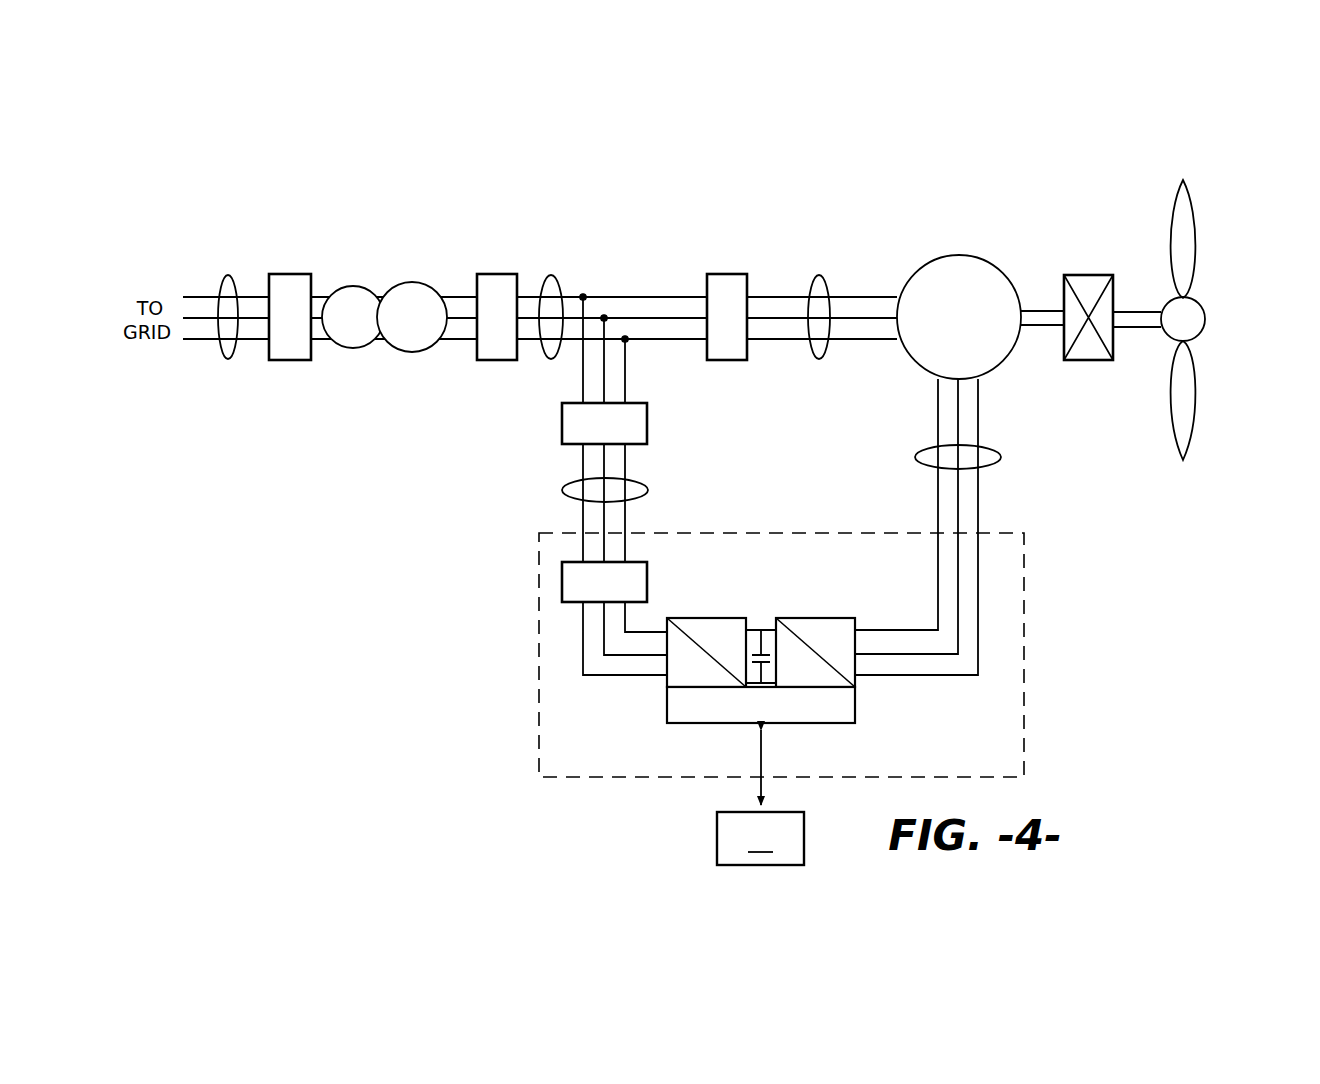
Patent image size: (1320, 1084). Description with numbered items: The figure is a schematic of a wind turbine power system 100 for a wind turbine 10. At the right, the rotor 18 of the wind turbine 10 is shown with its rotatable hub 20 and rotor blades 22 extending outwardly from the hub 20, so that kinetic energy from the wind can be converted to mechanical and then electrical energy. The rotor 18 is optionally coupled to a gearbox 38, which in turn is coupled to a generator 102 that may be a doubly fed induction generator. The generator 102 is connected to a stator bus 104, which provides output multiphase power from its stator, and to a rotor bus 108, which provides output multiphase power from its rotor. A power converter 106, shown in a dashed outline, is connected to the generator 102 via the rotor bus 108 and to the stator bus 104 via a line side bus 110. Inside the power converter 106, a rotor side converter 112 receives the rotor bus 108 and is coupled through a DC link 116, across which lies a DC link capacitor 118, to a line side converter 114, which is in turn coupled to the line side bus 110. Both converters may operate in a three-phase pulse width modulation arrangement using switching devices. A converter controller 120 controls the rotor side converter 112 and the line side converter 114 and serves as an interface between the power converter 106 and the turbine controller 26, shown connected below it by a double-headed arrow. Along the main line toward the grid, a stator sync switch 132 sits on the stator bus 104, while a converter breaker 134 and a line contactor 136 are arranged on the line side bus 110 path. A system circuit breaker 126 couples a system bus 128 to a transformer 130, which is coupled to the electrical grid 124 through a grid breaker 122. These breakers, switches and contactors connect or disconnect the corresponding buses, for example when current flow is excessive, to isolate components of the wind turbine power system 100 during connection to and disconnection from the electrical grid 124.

The wind turbine 10 is at (1200, 168).
The rotor 18 is at (1219, 329).
The rotatable hub 20 is at (1207, 312).
The rotor blade 22 is at (1196, 236).
The turbine controller 26 is at (760, 797).
The gearbox 38 is at (1088, 275).
The wind turbine power system 100 is at (450, 192).
The generator 102 is at (960, 255).
The stator bus 104 is at (820, 276).
The power converter 106 is at (1025, 636).
The rotor bus 108 is at (1003, 455).
The line side bus 110 is at (650, 490).
The rotor side converter 112 is at (855, 683).
The line side converter 114 is at (667, 683).
The DC link 116 is at (771, 628).
The DC link capacitor 118 is at (753, 645).
The converter controller 120 is at (708, 726).
The grid breaker 122 is at (300, 274).
The electrical grid 124 is at (232, 276).
The system circuit breaker 126 is at (497, 274).
The system bus 128 is at (551, 276).
The transformer 130 is at (412, 280).
The stator sync switch 132 is at (727, 274).
The converter breaker 134 is at (650, 422).
The line contactor 136 is at (562, 585).